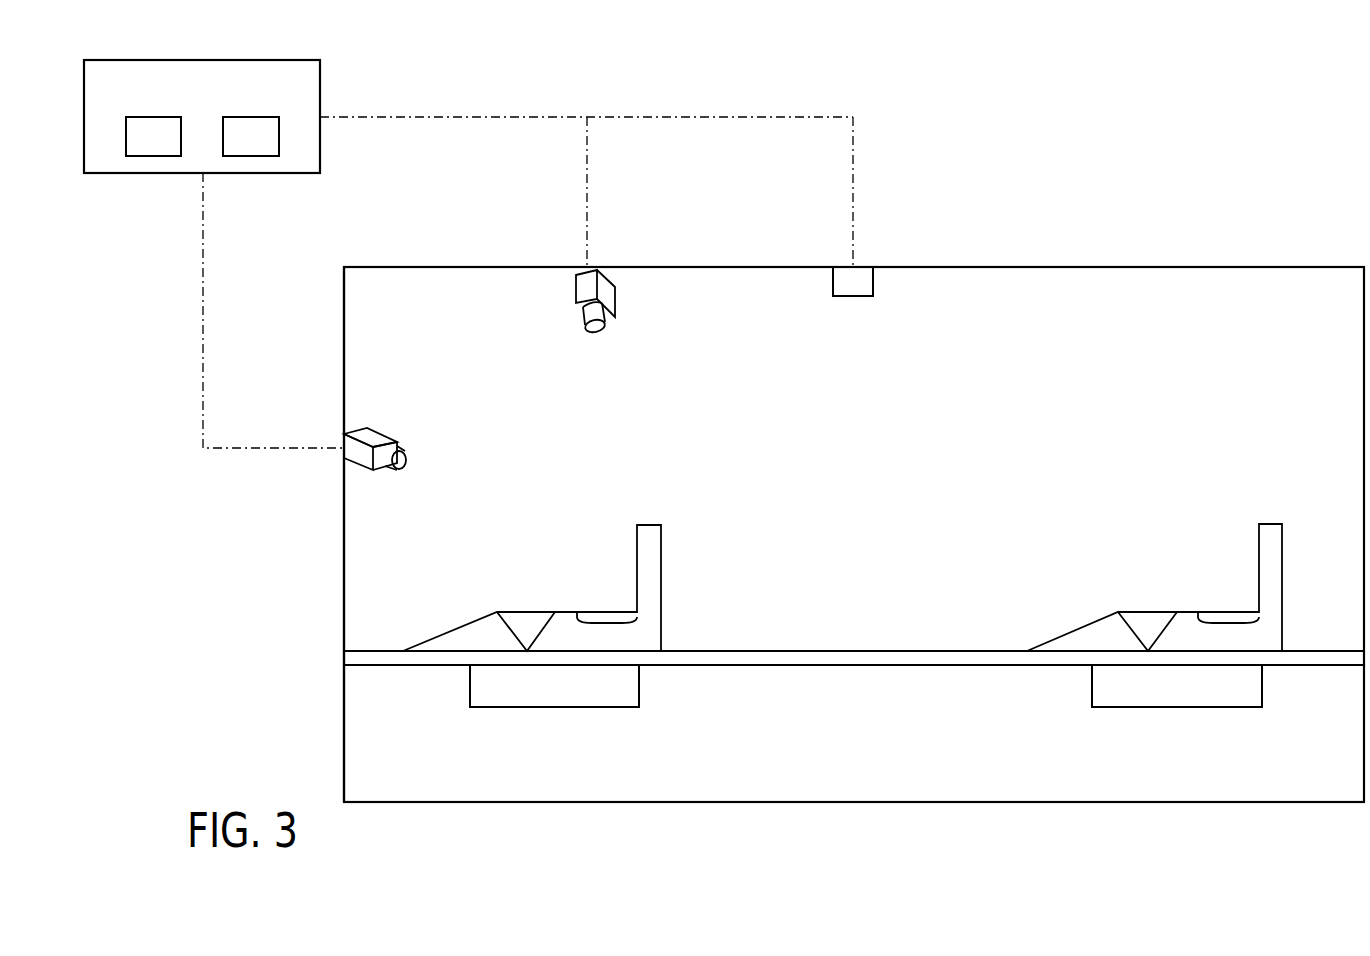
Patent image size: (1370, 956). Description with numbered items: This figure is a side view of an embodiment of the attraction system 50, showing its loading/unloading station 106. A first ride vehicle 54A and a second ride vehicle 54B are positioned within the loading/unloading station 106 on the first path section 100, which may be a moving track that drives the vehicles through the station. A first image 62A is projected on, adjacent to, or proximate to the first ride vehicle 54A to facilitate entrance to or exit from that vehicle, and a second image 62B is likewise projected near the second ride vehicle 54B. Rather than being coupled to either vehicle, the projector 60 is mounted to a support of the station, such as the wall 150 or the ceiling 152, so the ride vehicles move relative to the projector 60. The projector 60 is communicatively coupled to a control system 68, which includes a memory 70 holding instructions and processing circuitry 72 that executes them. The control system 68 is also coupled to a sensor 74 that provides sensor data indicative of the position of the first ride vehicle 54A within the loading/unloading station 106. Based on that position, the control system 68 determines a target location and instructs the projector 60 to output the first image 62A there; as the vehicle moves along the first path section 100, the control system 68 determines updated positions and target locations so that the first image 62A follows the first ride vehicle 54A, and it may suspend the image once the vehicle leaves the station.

The attraction system 50 is at (1108, 208).
The first ride vehicle 54A is at (648, 525).
The second ride vehicle 54B is at (1270, 524).
The projector 60 is at (575, 290).
The first image 62A is at (555, 707).
The second image 62B is at (1177, 707).
The control system 68 is at (203, 60).
The memory 70 is at (153, 173).
The processing circuitry 72 is at (252, 173).
The sensor 74 is at (853, 296).
The first path section 100 is at (377, 651).
The loading/unloading station 106 is at (963, 402).
The wall 150 is at (344, 358).
The ceiling 152 is at (757, 267).